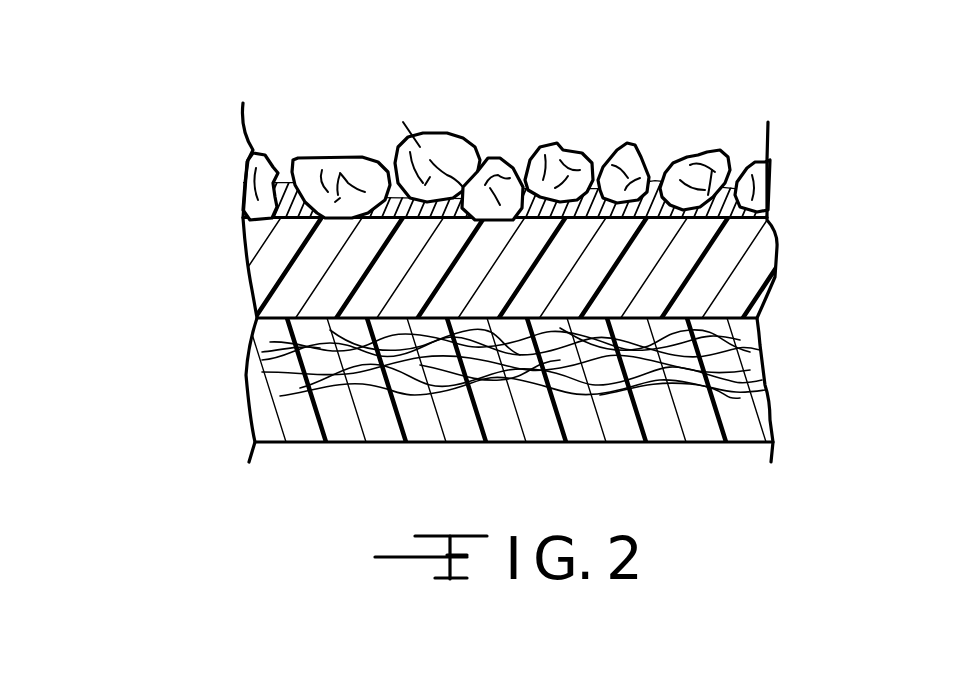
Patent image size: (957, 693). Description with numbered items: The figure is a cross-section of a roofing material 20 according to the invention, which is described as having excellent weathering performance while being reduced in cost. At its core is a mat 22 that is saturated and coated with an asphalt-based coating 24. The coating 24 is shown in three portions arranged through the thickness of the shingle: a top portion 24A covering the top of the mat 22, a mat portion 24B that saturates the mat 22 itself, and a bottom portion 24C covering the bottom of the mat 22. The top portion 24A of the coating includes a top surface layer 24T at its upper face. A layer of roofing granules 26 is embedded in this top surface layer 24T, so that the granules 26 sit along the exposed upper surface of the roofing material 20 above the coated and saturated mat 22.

The roofing material 20 is at (176, 152).
The mat 22 is at (277, 375).
The asphalt-based coating 24 is at (269, 263).
The top portion 24A is at (783, 180).
The mat portion 24B is at (783, 320).
The bottom portion 24C is at (783, 388).
The top surface layer 24T is at (598, 180).
The roofing granules 26 is at (355, 170).